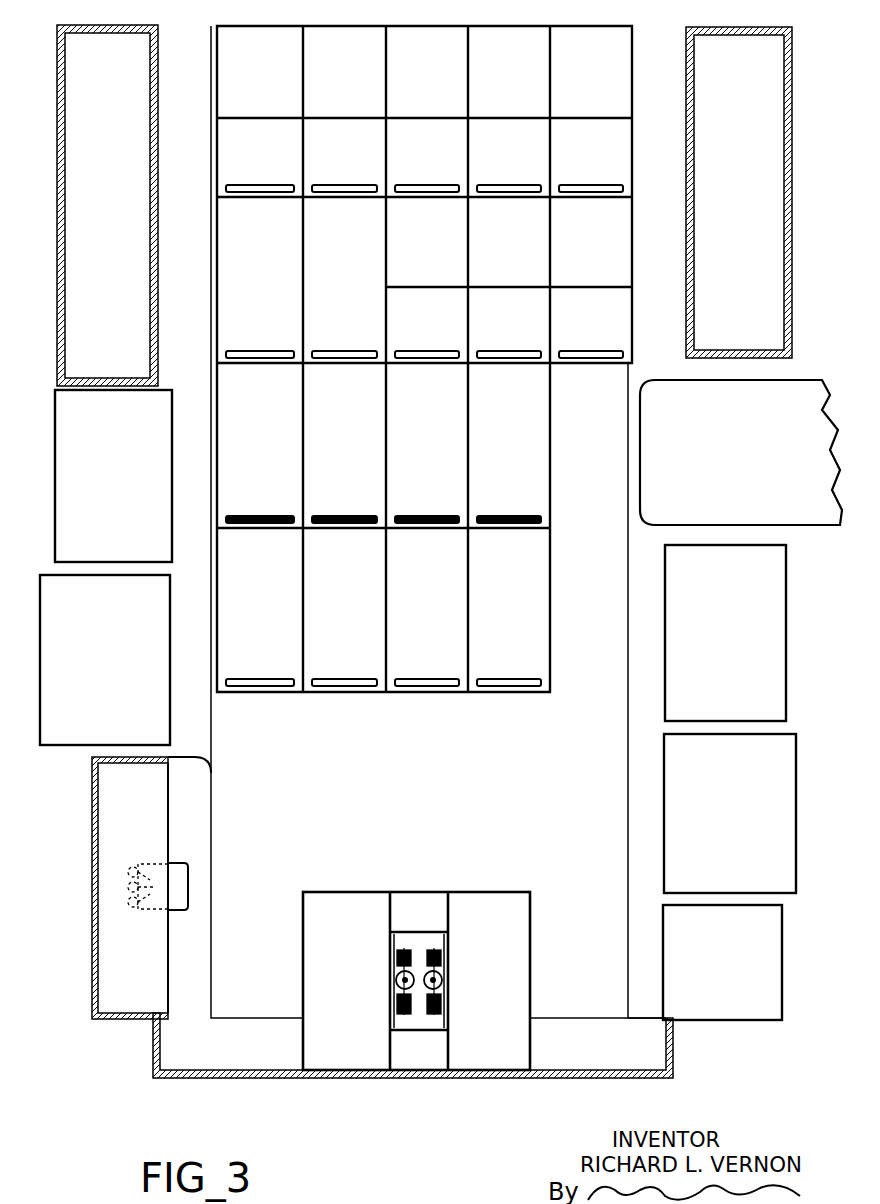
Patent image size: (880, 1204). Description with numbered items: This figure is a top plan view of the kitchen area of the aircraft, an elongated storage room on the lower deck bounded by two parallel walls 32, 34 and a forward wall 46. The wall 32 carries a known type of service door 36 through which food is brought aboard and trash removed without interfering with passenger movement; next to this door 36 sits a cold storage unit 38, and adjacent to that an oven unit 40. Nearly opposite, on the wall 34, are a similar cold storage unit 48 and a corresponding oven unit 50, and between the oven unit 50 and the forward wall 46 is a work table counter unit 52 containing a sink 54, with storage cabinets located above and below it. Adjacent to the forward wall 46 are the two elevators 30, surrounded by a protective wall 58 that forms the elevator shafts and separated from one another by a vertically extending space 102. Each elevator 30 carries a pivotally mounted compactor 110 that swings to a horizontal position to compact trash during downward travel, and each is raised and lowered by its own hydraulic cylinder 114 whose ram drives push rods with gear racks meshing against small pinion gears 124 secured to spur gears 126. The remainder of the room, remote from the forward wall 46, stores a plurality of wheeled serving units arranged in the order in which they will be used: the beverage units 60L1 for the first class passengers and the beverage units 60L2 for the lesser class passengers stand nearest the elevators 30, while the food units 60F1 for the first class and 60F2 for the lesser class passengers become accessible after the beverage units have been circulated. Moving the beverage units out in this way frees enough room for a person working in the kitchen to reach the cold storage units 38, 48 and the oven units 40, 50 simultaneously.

The elevators 30 is at (356, 986).
The wall 32 is at (693, 183).
The wall 34 is at (150, 166).
The service door 36 is at (740, 468).
The cold storage unit 38 is at (728, 652).
The oven unit 40 is at (738, 831).
The forward wall 46 is at (597, 1070).
The cold storage unit 48 is at (114, 482).
The oven unit 50 is at (110, 668).
The work table counter unit 52 is at (187, 833).
The sink 54 is at (180, 890).
The protective wall 58 is at (303, 922).
The wheeled serving units 60F1 is at (259, 87).
The wheeled serving units 60F2 is at (428, 87).
The wheeled serving units 60L1 is at (383, 624).
The wheeled serving units 60L2 is at (259, 254).
The vertically extending space 102 is at (412, 1053).
The compactor 110 is at (403, 915).
The hydraulic cylinder 114 is at (396, 984).
The pinion gears 124 is at (443, 954).
The spur gears 126 is at (395, 954).